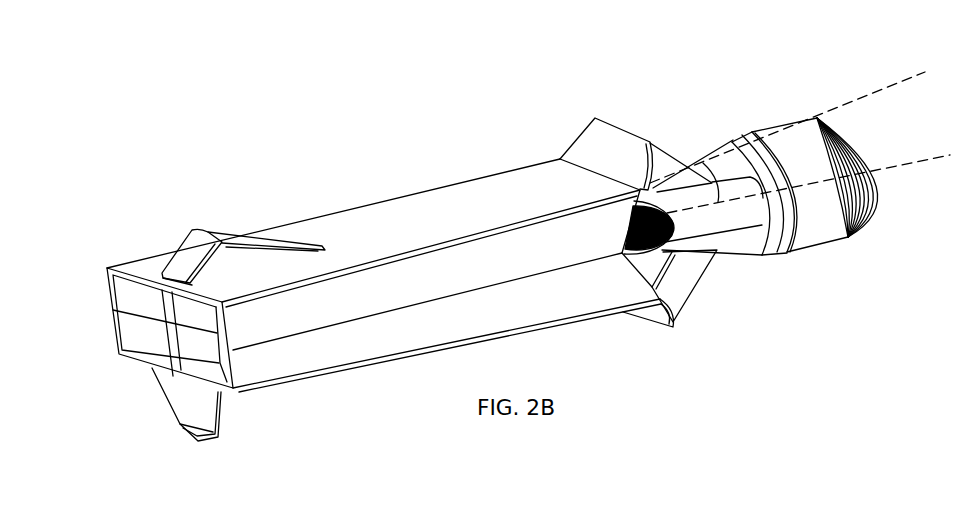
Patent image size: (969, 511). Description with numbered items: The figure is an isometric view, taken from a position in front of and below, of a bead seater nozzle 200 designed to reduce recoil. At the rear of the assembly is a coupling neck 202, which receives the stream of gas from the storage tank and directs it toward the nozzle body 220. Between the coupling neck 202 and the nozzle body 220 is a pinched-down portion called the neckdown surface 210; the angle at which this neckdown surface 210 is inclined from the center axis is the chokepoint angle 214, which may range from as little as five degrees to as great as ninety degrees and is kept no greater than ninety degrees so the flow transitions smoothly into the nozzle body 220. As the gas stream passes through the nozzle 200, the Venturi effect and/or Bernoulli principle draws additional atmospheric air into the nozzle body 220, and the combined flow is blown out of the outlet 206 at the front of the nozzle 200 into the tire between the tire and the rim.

The nozzle 200 is at (586, 66).
The coupling neck 202 is at (786, 265).
The outlet 206 is at (130, 335).
The neckdown surface 210 is at (712, 163).
The chokepoint angle 214 is at (792, 237).
The nozzle body 220 is at (430, 196).